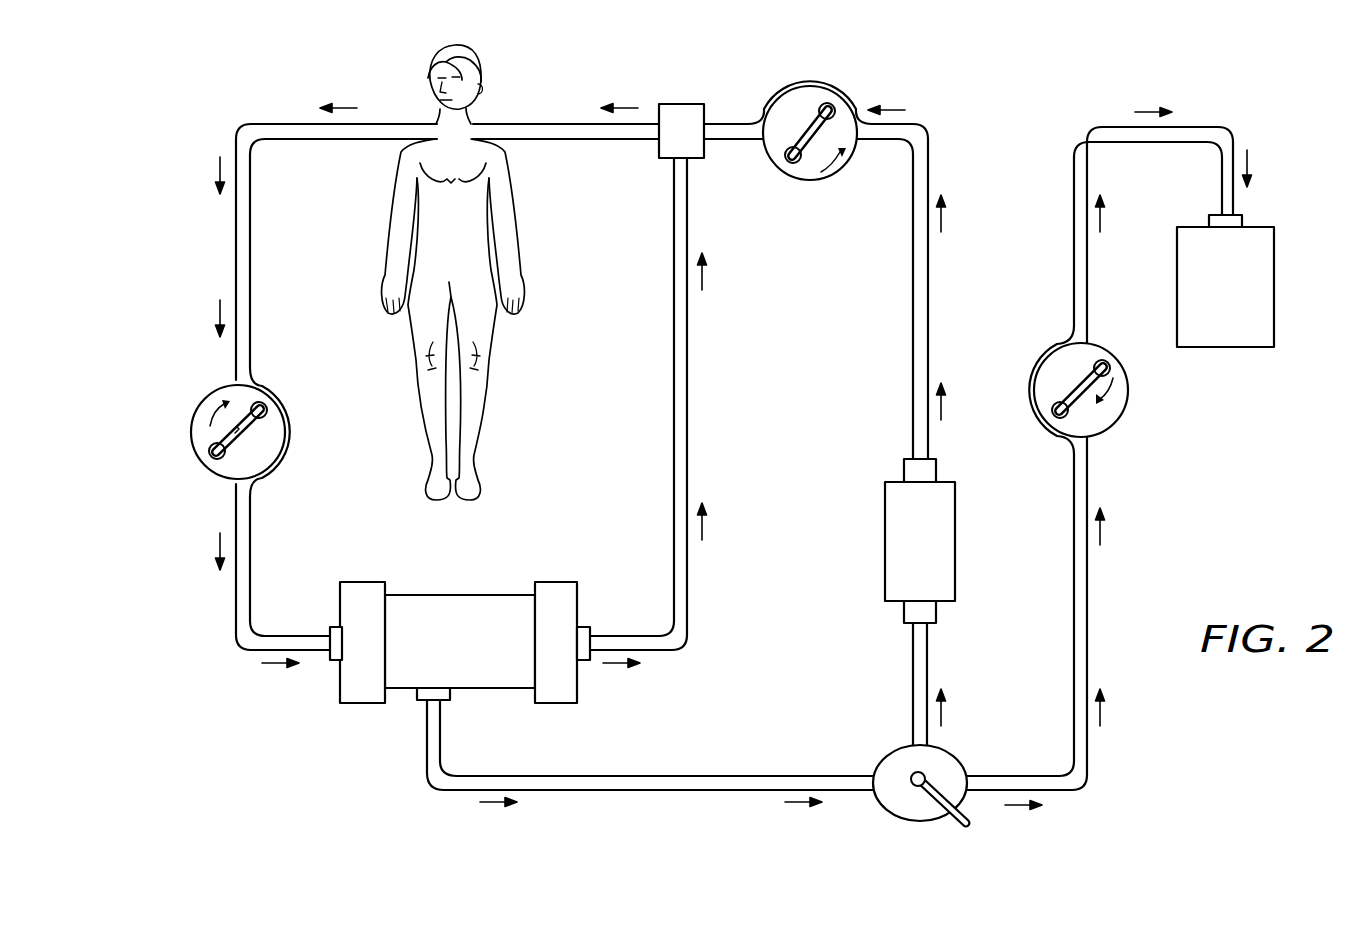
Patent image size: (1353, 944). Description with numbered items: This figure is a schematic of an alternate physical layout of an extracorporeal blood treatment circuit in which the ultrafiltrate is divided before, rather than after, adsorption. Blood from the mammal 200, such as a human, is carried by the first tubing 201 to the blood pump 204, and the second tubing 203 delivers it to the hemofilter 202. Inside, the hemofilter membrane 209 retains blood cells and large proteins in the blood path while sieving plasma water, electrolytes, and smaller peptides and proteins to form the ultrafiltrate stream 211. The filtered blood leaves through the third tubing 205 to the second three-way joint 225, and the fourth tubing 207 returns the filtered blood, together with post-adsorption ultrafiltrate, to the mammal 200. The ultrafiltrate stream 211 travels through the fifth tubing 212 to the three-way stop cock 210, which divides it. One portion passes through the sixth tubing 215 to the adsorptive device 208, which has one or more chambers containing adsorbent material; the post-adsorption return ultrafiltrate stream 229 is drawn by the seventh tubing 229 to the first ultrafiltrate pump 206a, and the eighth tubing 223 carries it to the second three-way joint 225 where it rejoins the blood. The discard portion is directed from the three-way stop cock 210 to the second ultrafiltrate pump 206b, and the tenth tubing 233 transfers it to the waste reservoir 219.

The mammal 200 is at (510, 187).
The first tubing 201 is at (232, 268).
The hemofilter 202 is at (461, 594).
The second tubing 203 is at (235, 597).
The blood pump 204 is at (191, 432).
The third tubing 205 is at (690, 388).
The first ultrafiltrate pump 206a is at (800, 184).
The second ultrafiltrate pump 206b is at (1130, 388).
The fourth tubing 207 is at (553, 119).
The adsorptive device 208 is at (955, 541).
The hemofilter membrane 209 is at (476, 682).
The three-way stop cock 210 is at (920, 824).
The ultrafiltrate stream 211 is at (425, 745).
The fifth tubing 212 is at (634, 790).
The sixth tubing 215 is at (930, 302).
The waste reservoir 219 is at (1277, 286).
The eighth tubing 223 is at (733, 122).
The second three-way joint 225 is at (687, 103).
The seventh tubing 229 is at (912, 402).
The tenth tubing 233 is at (1073, 195).